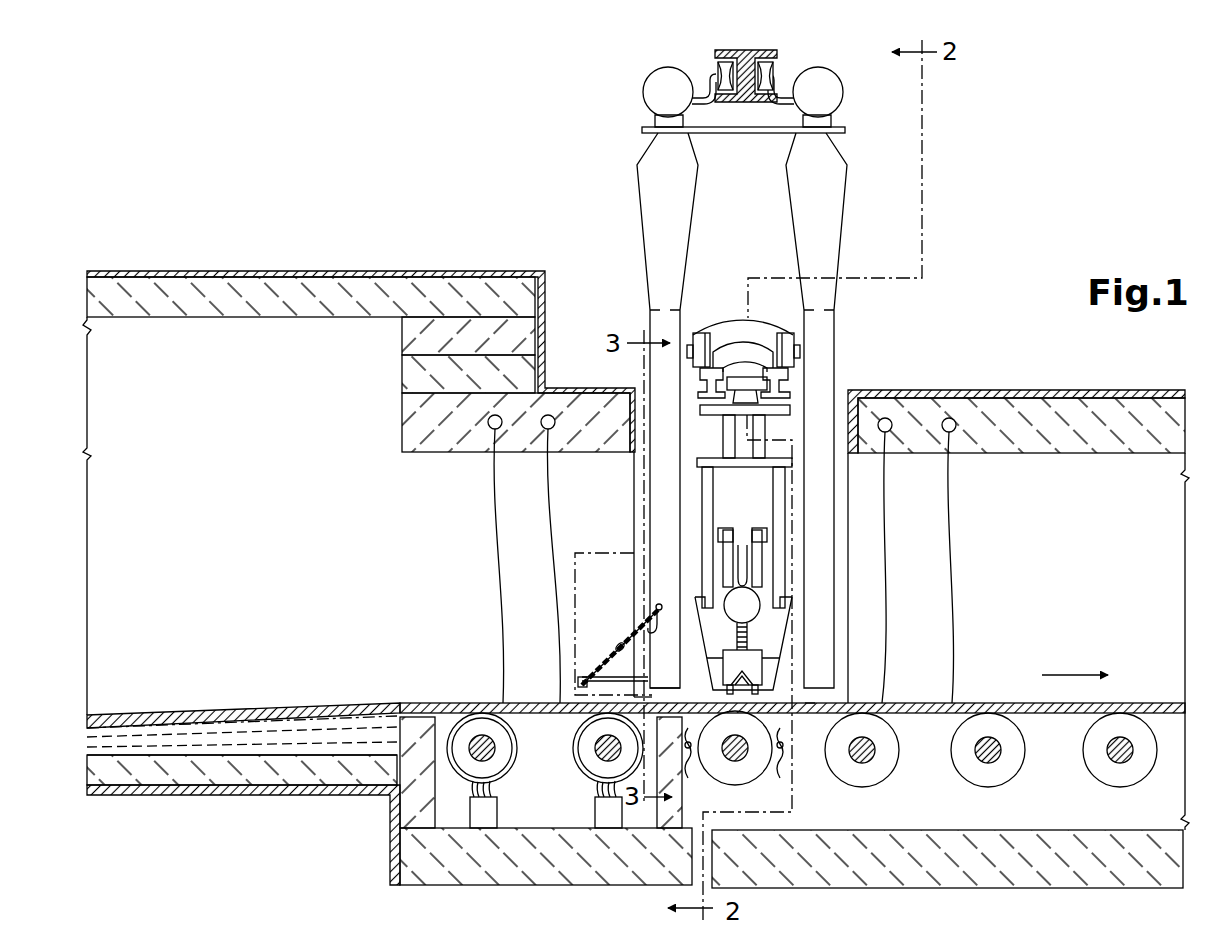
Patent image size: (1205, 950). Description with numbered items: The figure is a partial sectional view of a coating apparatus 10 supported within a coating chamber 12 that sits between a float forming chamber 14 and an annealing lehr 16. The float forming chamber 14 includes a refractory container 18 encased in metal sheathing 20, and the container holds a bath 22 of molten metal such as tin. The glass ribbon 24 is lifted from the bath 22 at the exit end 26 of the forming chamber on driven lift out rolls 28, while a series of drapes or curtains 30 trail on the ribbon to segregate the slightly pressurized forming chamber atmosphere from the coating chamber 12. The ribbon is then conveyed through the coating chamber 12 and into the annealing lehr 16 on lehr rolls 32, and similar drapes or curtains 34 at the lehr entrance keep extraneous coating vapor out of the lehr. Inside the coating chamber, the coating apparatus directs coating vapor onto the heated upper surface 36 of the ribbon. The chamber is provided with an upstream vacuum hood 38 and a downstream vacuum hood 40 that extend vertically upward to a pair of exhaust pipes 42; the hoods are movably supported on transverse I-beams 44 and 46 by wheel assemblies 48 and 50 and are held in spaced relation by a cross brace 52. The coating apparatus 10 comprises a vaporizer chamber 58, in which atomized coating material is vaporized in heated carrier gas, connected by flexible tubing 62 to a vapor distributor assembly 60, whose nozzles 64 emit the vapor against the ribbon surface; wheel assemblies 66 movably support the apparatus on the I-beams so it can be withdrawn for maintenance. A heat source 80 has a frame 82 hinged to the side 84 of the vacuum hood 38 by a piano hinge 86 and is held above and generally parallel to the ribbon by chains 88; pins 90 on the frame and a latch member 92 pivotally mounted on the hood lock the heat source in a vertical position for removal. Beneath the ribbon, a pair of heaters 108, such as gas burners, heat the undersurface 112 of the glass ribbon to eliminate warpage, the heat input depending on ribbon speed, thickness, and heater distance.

The coating apparatus 10 is at (700, 548).
The coating chamber 12 is at (842, 388).
The float forming chamber 14 is at (462, 256).
The annealing lehr 16 is at (1160, 376).
The refractory container 18 is at (247, 780).
The metal sheathing 20 is at (327, 796).
The bath of molten metal 22 is at (220, 735).
The glass ribbon 24 is at (372, 702).
The exit end 26 is at (418, 716).
The lift out rolls 28 is at (500, 766).
The drapes or curtains 30 is at (524, 559).
The lehr rolls 32 is at (718, 776).
The drapes or curtains 34 is at (917, 560).
The upper surface 36 is at (703, 703).
The vacuum hood 38 is at (646, 312).
The vacuum hood 40 is at (838, 339).
The exhaust pipes 42 is at (646, 93).
The I-beam 44 is at (744, 365).
The I-beam 46 is at (745, 48).
The wheel assembly 48 is at (743, 340).
The wheel assembly 50 is at (708, 60).
The cross brace 52 is at (745, 135).
The vaporizer chamber 58 is at (742, 582).
The vapor distributor assembly 60 is at (772, 657).
The flexible tubing 62 is at (730, 648).
The nozzles 64 is at (742, 672).
The wheel assemblies 66 is at (745, 377).
The heat source 80 is at (627, 632).
The frame 82 is at (592, 702).
The side 84 is at (650, 569).
The piano hinge 86 is at (646, 672).
The chains 88 is at (619, 643).
The pins 90 is at (612, 659).
The latch member 92 is at (660, 627).
The heaters 108 is at (737, 764).
The undersurface 112 is at (810, 714).